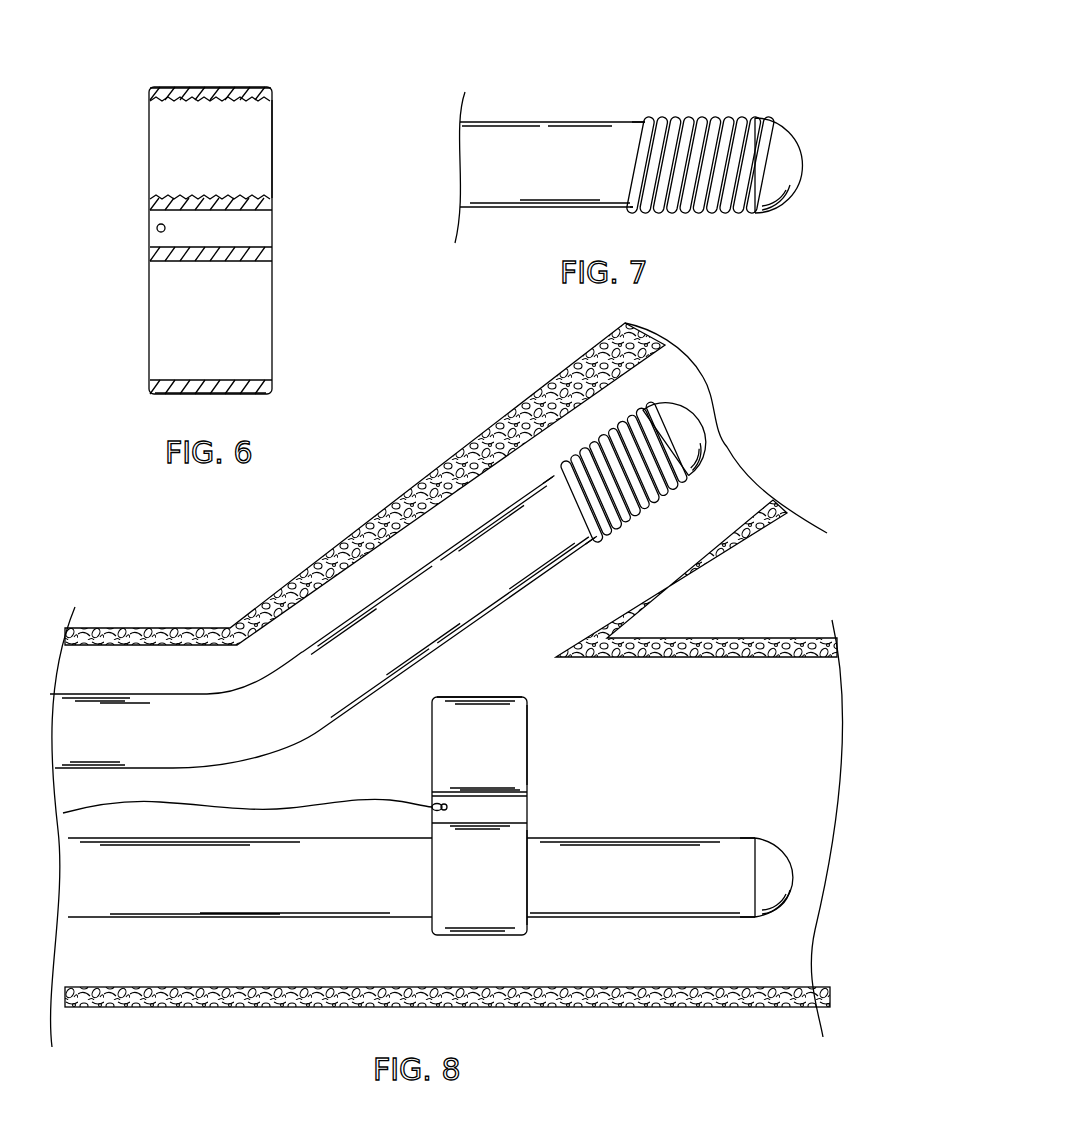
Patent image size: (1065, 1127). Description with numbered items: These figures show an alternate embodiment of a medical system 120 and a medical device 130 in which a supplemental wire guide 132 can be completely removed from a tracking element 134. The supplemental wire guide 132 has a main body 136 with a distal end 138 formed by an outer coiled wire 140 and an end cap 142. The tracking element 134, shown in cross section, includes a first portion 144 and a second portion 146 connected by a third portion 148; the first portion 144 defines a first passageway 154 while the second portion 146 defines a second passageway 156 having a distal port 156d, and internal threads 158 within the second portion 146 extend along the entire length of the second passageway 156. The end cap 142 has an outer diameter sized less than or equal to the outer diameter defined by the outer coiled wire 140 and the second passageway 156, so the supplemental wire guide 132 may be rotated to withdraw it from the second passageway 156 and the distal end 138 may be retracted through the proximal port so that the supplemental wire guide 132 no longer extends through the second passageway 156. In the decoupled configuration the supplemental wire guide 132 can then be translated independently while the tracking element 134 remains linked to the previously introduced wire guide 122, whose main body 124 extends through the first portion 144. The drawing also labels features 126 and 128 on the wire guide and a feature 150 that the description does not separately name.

In FIG. 8, the medical system 120 is at (204, 568).
In FIG. 8, the wire guide 122 is at (173, 920).
In FIG. 8, the main body 124 is at (400, 903).
In FIG. 8, the distal end of second tube 126 is at (745, 900).
In FIG. 8, the end cap 128 is at (770, 848).
In FIG. 6, the medical device 130 is at (145, 65).
In FIG. 8, the medical device 130 is at (408, 717).
In FIG. 7, the supplemental wire guide 132 is at (537, 122).
In FIG. 8, the supplemental wire guide 132 is at (180, 693).
In FIG. 6, the tracking element 134 is at (193, 86).
In FIG. 8, the tracking element 134 is at (468, 697).
In FIG. 7, the main body 136 is at (522, 188).
In FIG. 8, the main body 136 is at (308, 667).
In FIG. 7, the distal end 138 is at (720, 118).
In FIG. 8, the distal end 138 is at (553, 483).
In FIG. 7, the outer coiled wire 140 is at (693, 118).
In FIG. 8, the outer coiled wire 140 is at (585, 540).
In FIG. 7, the end cap 142 is at (790, 163).
In FIG. 8, the end cap 142 is at (657, 435).
In FIG. 6, the first portion 144 is at (263, 385).
In FIG. 8, the first portion 144 is at (518, 850).
In FIG. 6, the second portion 146 is at (267, 93).
In FIG. 8, the second portion 146 is at (518, 735).
In FIG. 6, the third portion 148 is at (263, 237).
In FIG. 8, the suture 150 is at (153, 805).
In FIG. 6, the first passageway 154 is at (168, 380).
In FIG. 6, the second passageway 156 is at (168, 198).
In FIG. 6, the distal port 156d is at (273, 132).
In FIG. 6, the internal threads 158 is at (253, 200).